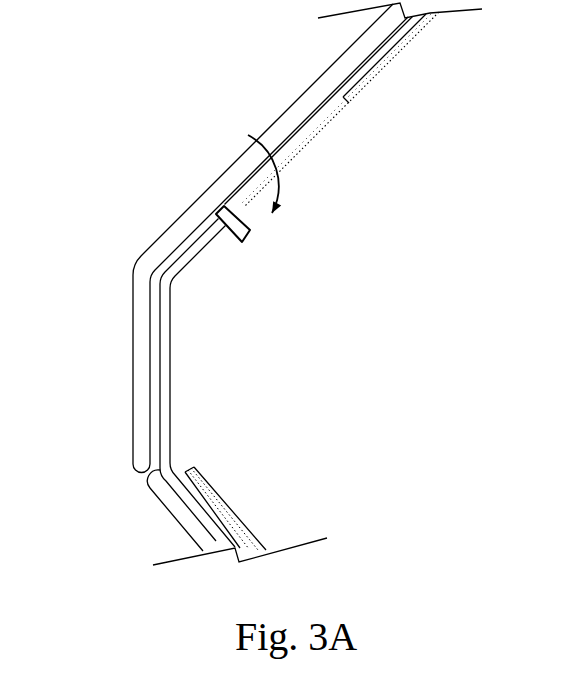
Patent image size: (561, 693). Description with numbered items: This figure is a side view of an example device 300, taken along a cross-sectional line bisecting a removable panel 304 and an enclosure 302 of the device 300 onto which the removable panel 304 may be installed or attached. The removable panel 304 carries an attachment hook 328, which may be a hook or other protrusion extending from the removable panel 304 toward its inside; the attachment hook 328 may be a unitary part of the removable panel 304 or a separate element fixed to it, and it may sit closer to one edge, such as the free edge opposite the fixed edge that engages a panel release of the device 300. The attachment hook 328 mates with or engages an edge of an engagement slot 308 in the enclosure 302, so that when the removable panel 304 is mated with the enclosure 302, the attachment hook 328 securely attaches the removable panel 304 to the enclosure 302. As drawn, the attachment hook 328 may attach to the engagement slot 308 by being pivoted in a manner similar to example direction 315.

The device 300 is at (121, 68).
The enclosure 302 is at (244, 506).
The removable panel 304 is at (133, 316).
The engagement slot 308 is at (311, 132).
The example direction 315 is at (282, 194).
The attachment hook 328 is at (253, 230).